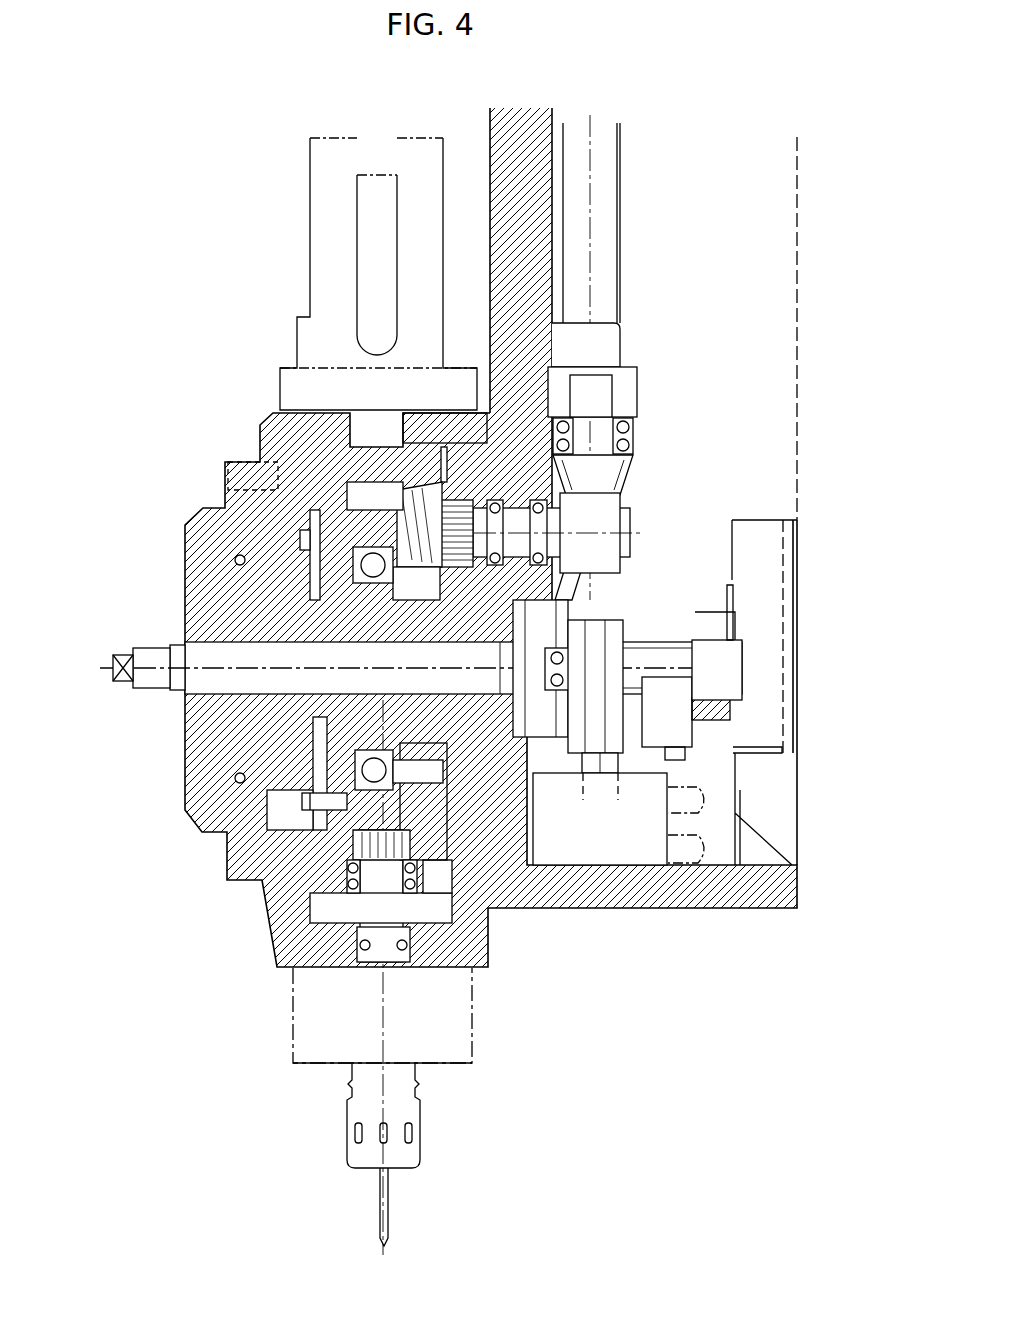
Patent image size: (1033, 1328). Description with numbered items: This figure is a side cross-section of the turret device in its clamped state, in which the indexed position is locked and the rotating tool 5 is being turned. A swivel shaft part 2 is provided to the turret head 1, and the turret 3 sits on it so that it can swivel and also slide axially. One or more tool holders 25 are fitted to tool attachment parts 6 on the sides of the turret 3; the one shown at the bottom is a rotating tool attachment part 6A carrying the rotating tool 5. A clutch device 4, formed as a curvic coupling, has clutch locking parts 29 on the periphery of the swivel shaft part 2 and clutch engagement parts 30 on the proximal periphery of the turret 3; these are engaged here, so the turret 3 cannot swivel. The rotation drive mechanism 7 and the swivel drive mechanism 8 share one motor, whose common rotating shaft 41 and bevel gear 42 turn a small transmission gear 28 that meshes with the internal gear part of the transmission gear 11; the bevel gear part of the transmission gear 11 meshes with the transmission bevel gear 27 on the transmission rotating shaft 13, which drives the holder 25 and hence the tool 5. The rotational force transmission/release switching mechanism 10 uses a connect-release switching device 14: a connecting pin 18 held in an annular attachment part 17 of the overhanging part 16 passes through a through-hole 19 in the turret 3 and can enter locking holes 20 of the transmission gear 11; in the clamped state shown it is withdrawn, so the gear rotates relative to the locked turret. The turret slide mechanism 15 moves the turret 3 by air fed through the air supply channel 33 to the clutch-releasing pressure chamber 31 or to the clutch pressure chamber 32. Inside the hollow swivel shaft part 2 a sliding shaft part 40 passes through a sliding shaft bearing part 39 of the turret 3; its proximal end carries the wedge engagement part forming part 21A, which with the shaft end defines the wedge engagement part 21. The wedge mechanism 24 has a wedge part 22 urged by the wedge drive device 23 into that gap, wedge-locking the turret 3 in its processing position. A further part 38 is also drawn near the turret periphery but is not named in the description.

The turret head 1 is at (492, 130).
The swivel shaft part 2 is at (215, 708).
The turret 3 is at (195, 537).
The clutch device 4 is at (444, 415).
The rotating tool 5 is at (390, 1215).
The tool attachment part 6 is at (302, 232).
The rotating tool attachment part 6A is at (285, 1058).
The rotation drive mechanism 7 is at (370, 908).
The swivel drive mechanism 8 is at (428, 492).
The rotational force transmission/release switching mechanism 10 is at (400, 392).
The transmission gear 11 is at (462, 812).
The transmission rotating shaft 13 is at (382, 907).
The connect-release switching device 14 is at (313, 790).
The turret slide mechanism 15 is at (180, 608).
The overhanging part 16 is at (228, 483).
The annular attachment part 17 is at (298, 537).
The connecting pin 18 is at (300, 802).
The through-hole 19 is at (340, 813).
The locking holes 20 is at (270, 458).
The wedge engagement part 21 is at (633, 738).
The wedge engagement part forming part 21A is at (682, 620).
The wedge part 22 is at (630, 635).
The wedge drive device 23 is at (647, 850).
The wedge mechanism 24 is at (662, 580).
The tool holder 25 is at (312, 182).
The transmission bevel gear 27 is at (292, 912).
The small transmission gear 28 is at (478, 415).
The clutch locking parts 29 is at (462, 420).
The clutch engagement parts 30 is at (432, 420).
The clutch-releasing pressure chamber 31 is at (267, 797).
The clutch pressure chamber 32 is at (237, 463).
The air supply channel 33 is at (200, 565).
The ring 38 is at (190, 593).
The sliding shaft bearing part 39 is at (180, 630).
The sliding shaft part 40 is at (232, 672).
The common rotating shaft 41 is at (618, 195).
The bevel gear 42 is at (630, 475).